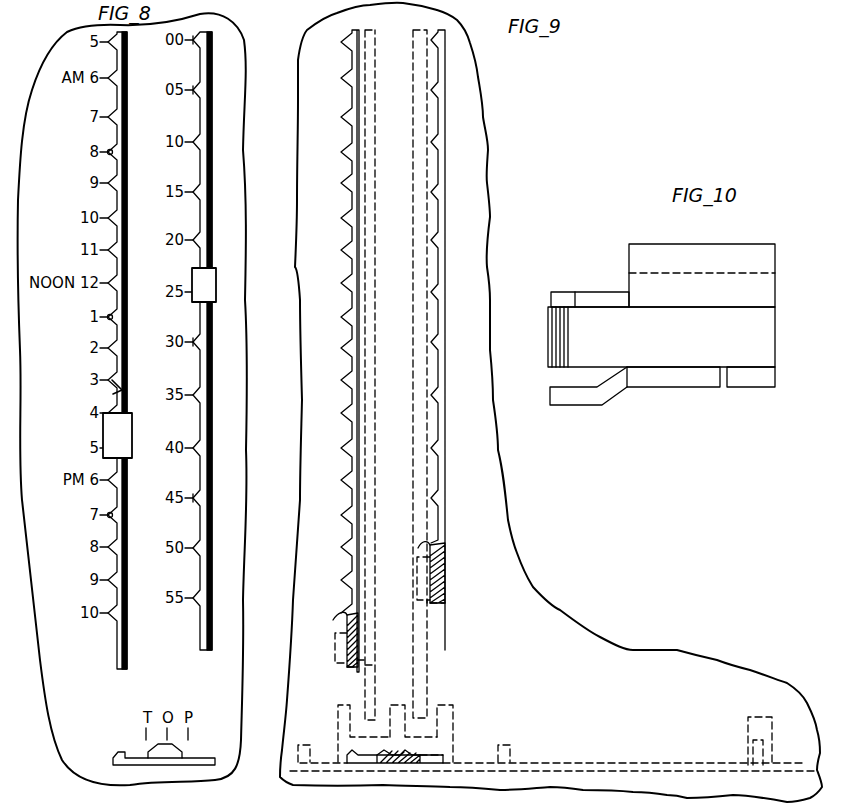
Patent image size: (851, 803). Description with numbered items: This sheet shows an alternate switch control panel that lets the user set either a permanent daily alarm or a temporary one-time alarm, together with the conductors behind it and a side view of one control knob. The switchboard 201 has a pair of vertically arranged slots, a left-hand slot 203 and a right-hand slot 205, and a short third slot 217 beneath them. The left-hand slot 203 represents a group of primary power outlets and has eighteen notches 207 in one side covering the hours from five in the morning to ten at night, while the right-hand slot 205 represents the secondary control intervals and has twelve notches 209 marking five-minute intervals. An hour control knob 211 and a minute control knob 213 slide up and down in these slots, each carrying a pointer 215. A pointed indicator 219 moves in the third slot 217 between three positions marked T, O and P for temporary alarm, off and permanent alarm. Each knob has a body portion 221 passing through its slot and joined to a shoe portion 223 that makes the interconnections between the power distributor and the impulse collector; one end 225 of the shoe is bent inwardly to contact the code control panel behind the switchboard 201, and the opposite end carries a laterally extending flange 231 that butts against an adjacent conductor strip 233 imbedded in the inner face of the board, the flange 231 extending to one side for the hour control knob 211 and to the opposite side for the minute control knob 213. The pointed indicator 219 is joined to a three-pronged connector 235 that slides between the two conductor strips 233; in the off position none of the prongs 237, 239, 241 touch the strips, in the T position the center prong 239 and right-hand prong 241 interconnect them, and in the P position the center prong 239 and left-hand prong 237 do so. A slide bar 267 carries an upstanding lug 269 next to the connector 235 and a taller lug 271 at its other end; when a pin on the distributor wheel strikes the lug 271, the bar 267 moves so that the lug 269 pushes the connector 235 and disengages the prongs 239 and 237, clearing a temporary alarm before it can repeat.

In FIG. 8, the switchboard 201 is at (226, 38).
In FIG. 8, the left-hand slot 203 is at (118, 38).
In FIG. 9, the left-hand slot 203 is at (350, 351).
In FIG. 8, the right-hand slot 205 is at (205, 212).
In FIG. 9, the right-hand slot 205 is at (438, 340).
In FIG. 8, the notches 207 is at (111, 152).
In FIG. 8, the notches 209 is at (196, 90).
In FIG. 8, the hour control knob 211 is at (125, 430).
In FIG. 8, the minute control knob 213 is at (206, 284).
In FIG. 10, the minute control knob 213 is at (629, 272).
In FIG. 8, the pointer 215 is at (119, 388).
In FIG. 10, the pointer 215 is at (568, 292).
In FIG. 8, the third slot 217 is at (197, 758).
In FIG. 9, the third slot 217 is at (430, 758).
In FIG. 8, the pointed indicator 219 is at (155, 757).
In FIG. 9, the pointed indicator 219 is at (384, 753).
In FIG. 9, the body portion 221 is at (340, 648).
In FIG. 10, the body portion 221 is at (713, 342).
In FIG. 9, the shoe portion 223 is at (335, 636).
In FIG. 10, the shoe portion 223 is at (658, 376).
In FIG. 9, the end of shoe portion 225 is at (345, 618).
In FIG. 10, the end of shoe portion 225 is at (572, 396).
In FIG. 9, the flange 231 is at (376, 666).
In FIG. 10, the flange 231 is at (752, 378).
In FIG. 9, the conductor strip 233 is at (410, 271).
In FIG. 9, the three-pronged connector 235 is at (448, 746).
In FIG. 9, the left-hand prong 237 is at (338, 706).
In FIG. 9, the center prong 239 is at (405, 710).
In FIG. 9, the right-hand prong 241 is at (452, 716).
In FIG. 9, the slide bar 267 is at (605, 766).
In FIG. 9, the lug 269 is at (300, 757).
In FIG. 9, the lug 271 is at (760, 739).